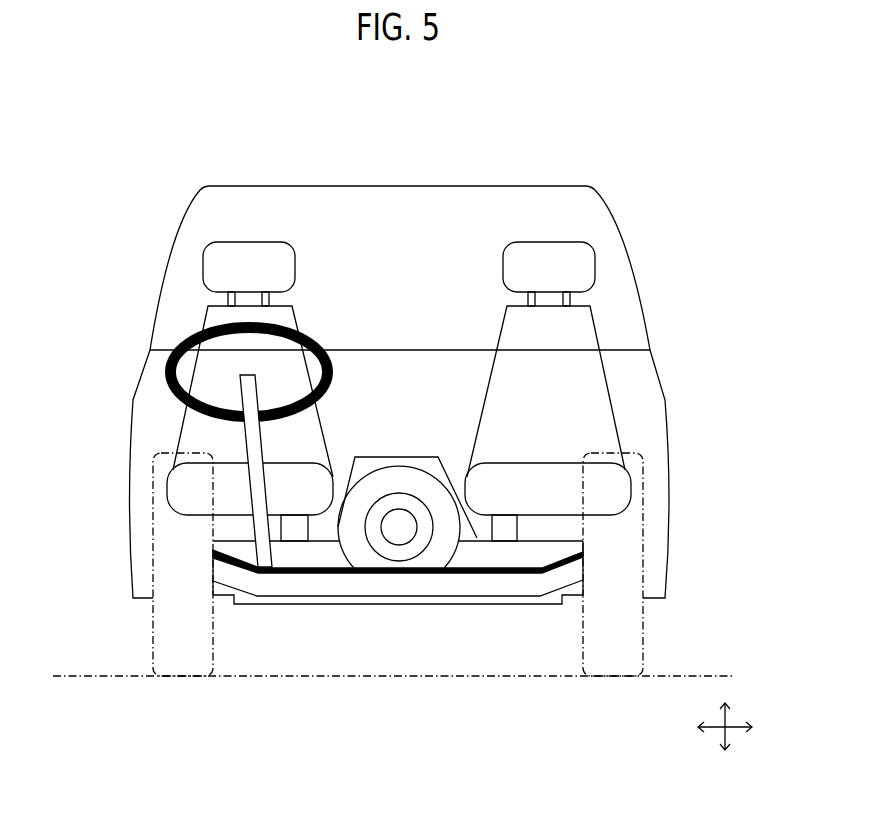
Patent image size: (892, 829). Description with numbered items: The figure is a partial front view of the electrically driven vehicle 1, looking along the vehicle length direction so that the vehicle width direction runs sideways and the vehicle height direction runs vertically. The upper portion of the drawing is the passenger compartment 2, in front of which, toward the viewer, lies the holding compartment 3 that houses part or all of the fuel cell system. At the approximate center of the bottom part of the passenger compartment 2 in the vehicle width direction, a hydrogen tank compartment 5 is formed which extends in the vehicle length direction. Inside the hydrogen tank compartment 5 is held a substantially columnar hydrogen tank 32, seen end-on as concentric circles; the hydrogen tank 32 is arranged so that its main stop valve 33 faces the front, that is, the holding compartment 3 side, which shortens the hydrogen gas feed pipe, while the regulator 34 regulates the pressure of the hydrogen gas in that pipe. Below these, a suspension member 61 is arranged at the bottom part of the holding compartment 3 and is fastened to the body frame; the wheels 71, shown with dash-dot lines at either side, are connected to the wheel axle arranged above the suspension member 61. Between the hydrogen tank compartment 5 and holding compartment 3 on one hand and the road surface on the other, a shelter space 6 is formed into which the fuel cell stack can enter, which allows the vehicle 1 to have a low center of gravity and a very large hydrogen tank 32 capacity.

The electrically driven vehicle 1 is at (126, 198).
The passenger compartment 2 is at (230, 223).
The holding compartment 3 is at (616, 383).
The hydrogen tank compartment 5 is at (363, 480).
The shelter space 6 is at (372, 645).
The hydrogen tank 32 is at (381, 478).
The main stop valve 33 is at (401, 497).
The regulator 34 is at (409, 517).
The suspension member 61 is at (545, 594).
The wheels 71 is at (152, 610).